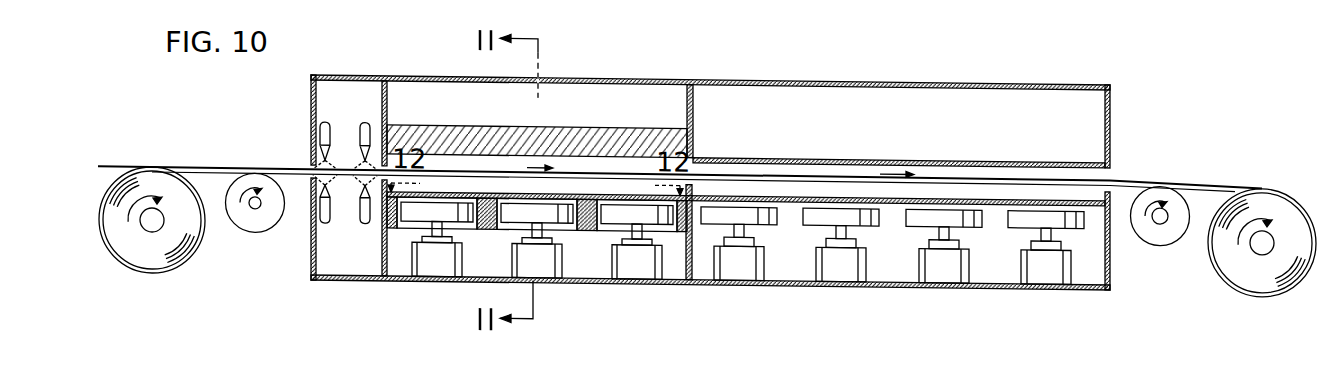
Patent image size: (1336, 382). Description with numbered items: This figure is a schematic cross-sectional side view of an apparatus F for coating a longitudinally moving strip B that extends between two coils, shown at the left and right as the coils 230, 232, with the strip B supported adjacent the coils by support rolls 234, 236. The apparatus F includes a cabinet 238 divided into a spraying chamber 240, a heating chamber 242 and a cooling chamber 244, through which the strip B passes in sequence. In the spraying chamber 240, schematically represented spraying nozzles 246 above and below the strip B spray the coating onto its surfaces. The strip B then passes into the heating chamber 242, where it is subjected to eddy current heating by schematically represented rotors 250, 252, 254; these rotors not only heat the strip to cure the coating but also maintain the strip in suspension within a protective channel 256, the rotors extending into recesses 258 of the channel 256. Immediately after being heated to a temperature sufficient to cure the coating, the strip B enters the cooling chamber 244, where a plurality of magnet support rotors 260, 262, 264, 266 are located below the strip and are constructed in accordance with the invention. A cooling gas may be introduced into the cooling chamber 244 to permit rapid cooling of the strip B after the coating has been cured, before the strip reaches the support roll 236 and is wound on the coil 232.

The strip B is at (210, 169).
The apparatus F is at (771, 70).
The supply roll 230 is at (155, 134).
The take-up roll 232 is at (1266, 183).
The support roll 234 is at (258, 221).
The support roll 236 is at (1172, 227).
The cabinet 238 is at (852, 75).
The spraying chamber 240 is at (356, 84).
The heating chamber 242 is at (622, 80).
The cooling chamber 244 is at (971, 87).
The spraying nozzles 246 is at (328, 222).
The rotor 250 is at (420, 208).
The rotor 252 is at (548, 262).
The rotor 254 is at (642, 261).
The protective channel 256 is at (582, 132).
The recesses 258 is at (575, 228).
The magnet support rotor 260 is at (743, 256).
The magnet support rotor 262 is at (851, 268).
The magnet support rotor 264 is at (953, 264).
The magnet support rotor 266 is at (1045, 261).